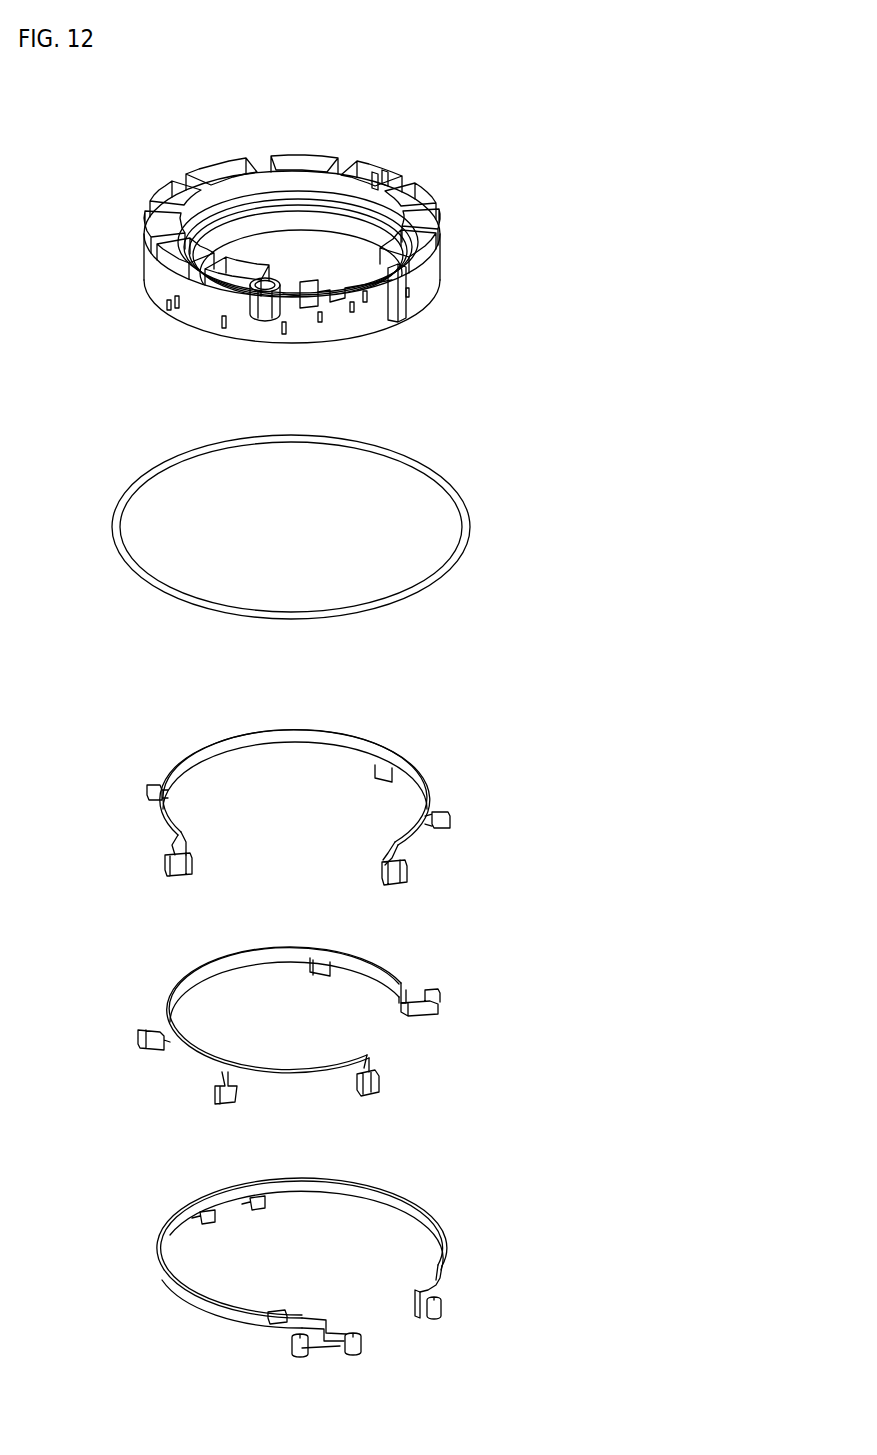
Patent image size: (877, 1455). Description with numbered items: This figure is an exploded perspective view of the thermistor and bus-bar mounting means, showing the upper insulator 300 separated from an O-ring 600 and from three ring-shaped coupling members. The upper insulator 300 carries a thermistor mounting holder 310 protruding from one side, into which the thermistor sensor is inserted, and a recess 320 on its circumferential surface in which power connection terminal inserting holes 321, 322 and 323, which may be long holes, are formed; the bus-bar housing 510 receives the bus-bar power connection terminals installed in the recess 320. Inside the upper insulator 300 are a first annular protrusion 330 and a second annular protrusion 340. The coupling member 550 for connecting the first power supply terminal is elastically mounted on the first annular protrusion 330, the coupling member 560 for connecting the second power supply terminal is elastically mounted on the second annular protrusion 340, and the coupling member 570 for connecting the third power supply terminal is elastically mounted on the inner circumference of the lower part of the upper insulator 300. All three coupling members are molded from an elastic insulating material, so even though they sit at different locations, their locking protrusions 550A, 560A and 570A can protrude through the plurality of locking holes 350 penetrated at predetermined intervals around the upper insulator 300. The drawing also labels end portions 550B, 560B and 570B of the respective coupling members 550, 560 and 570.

The upper insulator 300 is at (460, 188).
The thermistor mounting holder 310 is at (252, 316).
The recess 320 is at (350, 310).
The power connection terminal inserting hole 321 is at (399, 292).
The power connection terminal inserting hole 322 is at (326, 320).
The power connection terminal inserting hole 323 is at (363, 294).
The first annular protrusion 330 is at (375, 184).
The second annular protrusion 340 is at (392, 182).
The locking hole 350 is at (222, 322).
The O-ring 600 is at (460, 486).
The coupling member for connecting the first power supply terminal 550 is at (302, 803).
The bus-bar housing 510 is at (450, 818).
The locking protrusion 550A is at (165, 862).
The first band terminal 550B is at (402, 872).
The coupling member for connecting the second power supply terminal 560 is at (298, 1033).
The locking protrusion 560A is at (436, 1000).
The second band terminal 560B is at (378, 1086).
The coupling member for connecting the third power supply terminal 570 is at (363, 1288).
The locking protrusion 570A is at (445, 1306).
The third band terminal 570B is at (360, 1342).